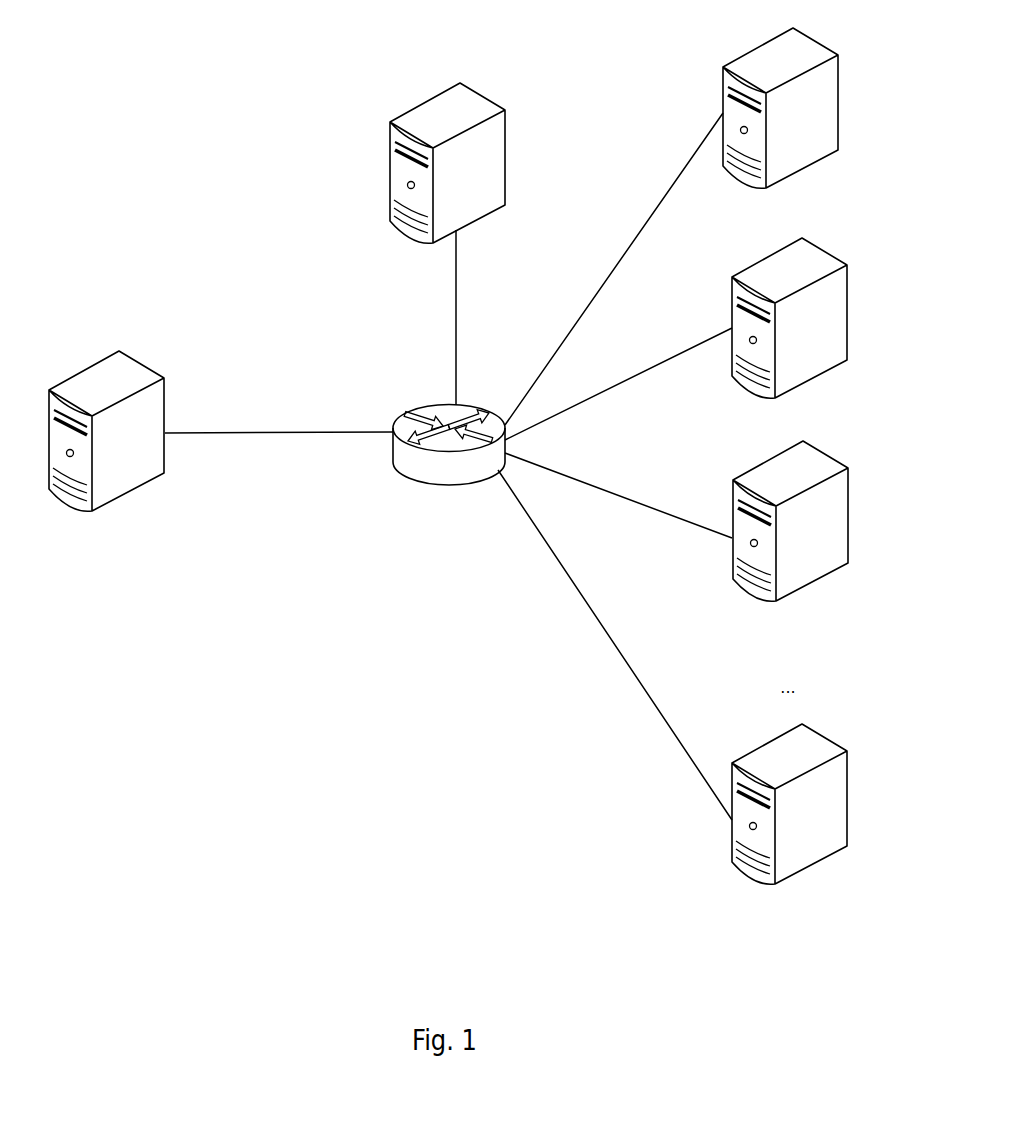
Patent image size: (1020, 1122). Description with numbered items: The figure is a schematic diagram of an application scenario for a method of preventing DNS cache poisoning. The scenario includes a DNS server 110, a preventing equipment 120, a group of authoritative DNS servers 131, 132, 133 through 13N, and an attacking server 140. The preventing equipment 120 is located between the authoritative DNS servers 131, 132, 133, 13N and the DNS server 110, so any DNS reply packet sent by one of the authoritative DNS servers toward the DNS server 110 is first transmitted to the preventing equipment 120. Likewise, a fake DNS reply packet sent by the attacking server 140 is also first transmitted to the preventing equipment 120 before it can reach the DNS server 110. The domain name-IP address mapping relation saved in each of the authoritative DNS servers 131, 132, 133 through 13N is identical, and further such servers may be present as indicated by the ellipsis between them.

The DNS server 110 is at (137, 358).
The preventing equipment 120 is at (457, 403).
The attacking server 140 is at (487, 93).
The authoritative DNS server 131 is at (817, 40).
The authoritative DNS server 132 is at (823, 247).
The authoritative DNS server 133 is at (827, 452).
The authoritative DNS server 13N is at (825, 735).